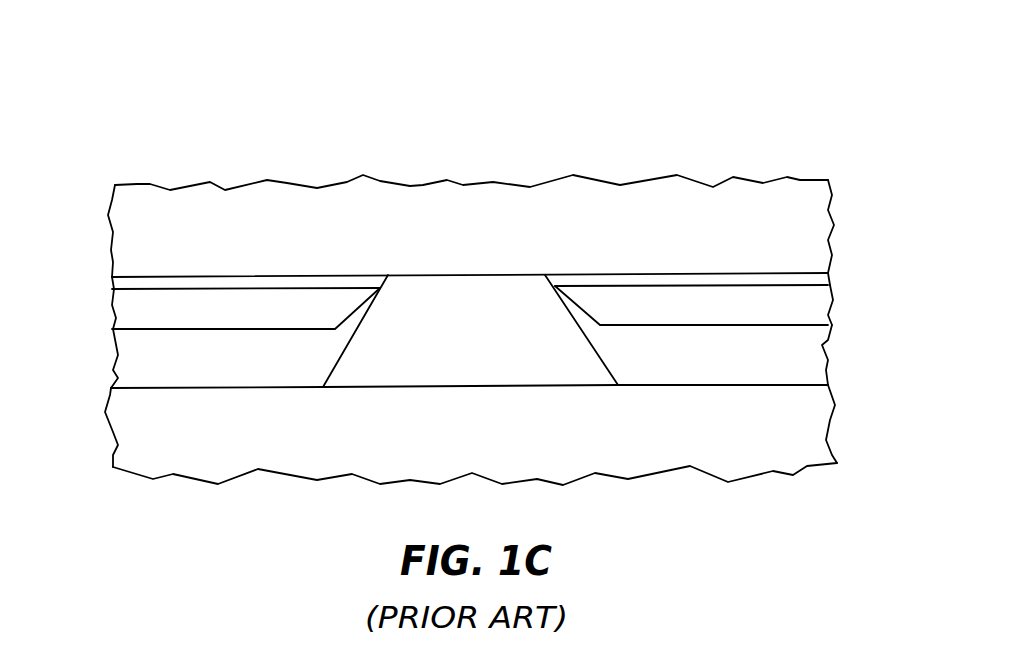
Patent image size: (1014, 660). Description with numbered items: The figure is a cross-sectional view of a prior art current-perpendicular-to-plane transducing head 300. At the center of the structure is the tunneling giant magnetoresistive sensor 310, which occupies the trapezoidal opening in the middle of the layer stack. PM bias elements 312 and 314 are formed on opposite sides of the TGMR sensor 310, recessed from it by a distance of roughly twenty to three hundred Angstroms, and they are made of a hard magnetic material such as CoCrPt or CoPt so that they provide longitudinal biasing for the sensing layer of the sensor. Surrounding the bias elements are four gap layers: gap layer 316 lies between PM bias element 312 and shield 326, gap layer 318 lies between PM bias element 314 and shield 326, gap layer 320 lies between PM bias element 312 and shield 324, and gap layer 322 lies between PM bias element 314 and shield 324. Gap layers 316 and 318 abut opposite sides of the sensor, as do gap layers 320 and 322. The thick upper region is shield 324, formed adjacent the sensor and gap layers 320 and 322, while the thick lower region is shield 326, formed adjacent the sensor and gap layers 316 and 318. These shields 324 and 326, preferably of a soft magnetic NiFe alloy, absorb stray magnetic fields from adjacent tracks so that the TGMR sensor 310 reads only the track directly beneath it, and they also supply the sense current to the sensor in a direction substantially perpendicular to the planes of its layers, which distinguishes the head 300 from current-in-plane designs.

The current-perpendicular-to-plane transducing head 300 is at (624, 90).
The tunneling giant magnetoresistive sensor 310 is at (423, 293).
The PM bias element 312 is at (148, 315).
The PM bias element 314 is at (792, 307).
The gap layer 316 is at (158, 365).
The gap layer 318 is at (790, 363).
The gap layer 320 is at (188, 289).
The gap layer 322 is at (740, 278).
The shield 324 is at (782, 220).
The shield 326 is at (158, 445).